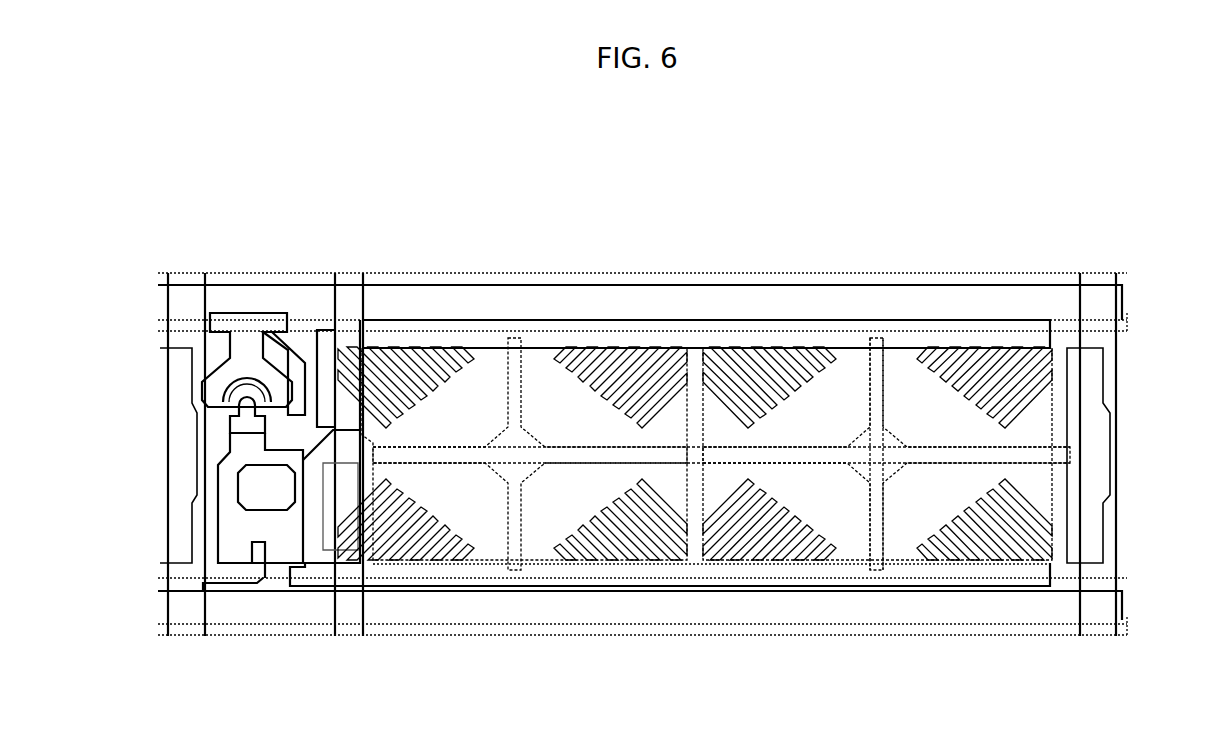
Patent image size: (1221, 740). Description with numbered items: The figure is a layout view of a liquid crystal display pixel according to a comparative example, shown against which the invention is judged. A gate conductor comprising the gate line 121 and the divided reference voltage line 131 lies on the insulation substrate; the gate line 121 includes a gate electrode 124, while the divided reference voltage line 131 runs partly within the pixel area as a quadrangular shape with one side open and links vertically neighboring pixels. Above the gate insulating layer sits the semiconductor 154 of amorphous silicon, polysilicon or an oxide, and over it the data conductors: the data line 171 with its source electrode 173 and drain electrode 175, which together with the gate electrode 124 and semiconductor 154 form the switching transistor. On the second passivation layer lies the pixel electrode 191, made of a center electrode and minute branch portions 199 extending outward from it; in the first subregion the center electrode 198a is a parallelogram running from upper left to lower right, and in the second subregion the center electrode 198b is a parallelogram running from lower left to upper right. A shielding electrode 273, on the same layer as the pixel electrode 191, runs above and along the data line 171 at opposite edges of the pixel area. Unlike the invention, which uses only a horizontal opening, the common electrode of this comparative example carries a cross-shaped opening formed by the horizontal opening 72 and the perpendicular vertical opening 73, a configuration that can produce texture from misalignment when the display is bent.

The gate line 121 is at (168, 512).
The gate electrode 124 is at (222, 330).
The divided reference voltage line 131 is at (1057, 327).
The semiconductor 154 is at (226, 402).
The data line 171 is at (688, 284).
The source electrode 173 is at (272, 383).
The drain electrode 175 is at (232, 412).
The pixel electrode 191 is at (1053, 535).
The center electrode of first subregion 198a is at (465, 395).
The center electrode of second subregion 198b is at (845, 385).
The minute branch portions 199 is at (600, 380).
The shielding electrode 273 is at (745, 274).
The horizontal opening 72 is at (600, 465).
The vertical opening 73 is at (884, 540).